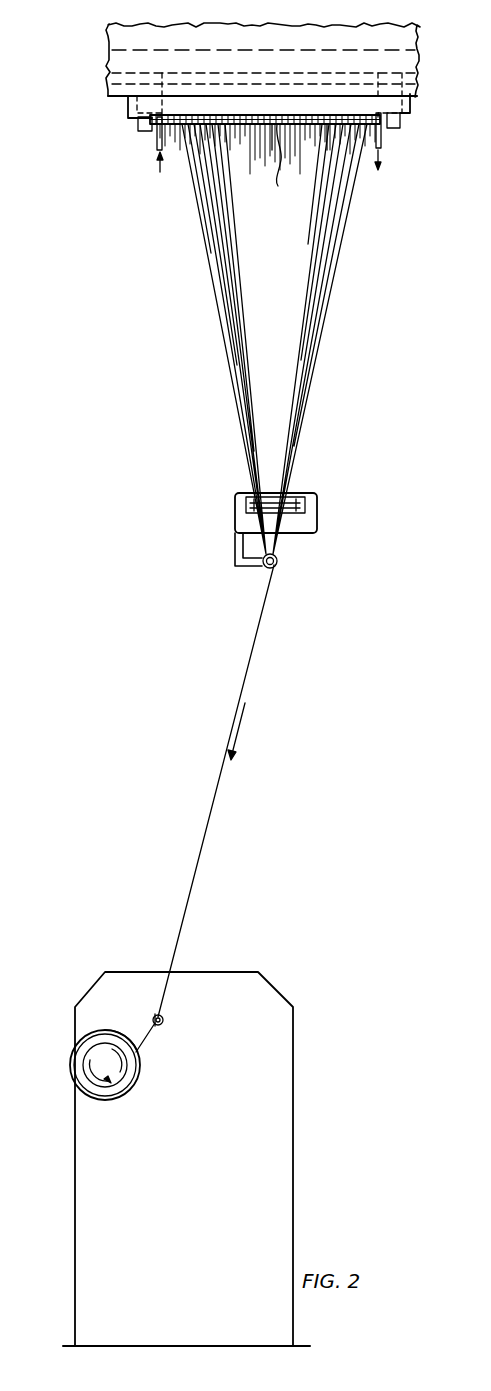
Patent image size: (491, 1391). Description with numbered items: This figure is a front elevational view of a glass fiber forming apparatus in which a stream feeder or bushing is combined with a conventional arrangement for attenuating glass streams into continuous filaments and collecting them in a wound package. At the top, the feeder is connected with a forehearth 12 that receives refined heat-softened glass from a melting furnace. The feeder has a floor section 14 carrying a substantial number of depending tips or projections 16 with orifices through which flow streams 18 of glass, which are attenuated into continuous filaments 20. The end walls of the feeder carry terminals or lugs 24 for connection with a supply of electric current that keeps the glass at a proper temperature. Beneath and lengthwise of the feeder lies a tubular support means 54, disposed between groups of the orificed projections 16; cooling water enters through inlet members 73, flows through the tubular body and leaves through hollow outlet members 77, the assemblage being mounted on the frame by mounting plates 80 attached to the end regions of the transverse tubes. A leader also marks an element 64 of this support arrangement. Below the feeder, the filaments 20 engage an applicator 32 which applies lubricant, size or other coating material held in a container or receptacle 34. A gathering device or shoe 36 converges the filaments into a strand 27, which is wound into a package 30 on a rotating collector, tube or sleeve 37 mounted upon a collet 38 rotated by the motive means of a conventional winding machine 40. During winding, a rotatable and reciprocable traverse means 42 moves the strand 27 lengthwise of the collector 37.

The forehearth 12 is at (106, 30).
The feeder floor section 14 is at (271, 126).
The tips or projections 16 is at (327, 118).
The streams 18 is at (232, 128).
The filaments 20 is at (226, 190).
The terminals or lugs 24 is at (138, 121).
The strand 27 is at (265, 627).
The package 30 is at (72, 1052).
The applicator 32 is at (293, 505).
The container or receptacle 34 is at (318, 515).
The gathering device or shoe 36 is at (265, 568).
The collector, tube or sleeve 37 is at (128, 1032).
The collet 38 is at (82, 1072).
The winding machine 40 is at (210, 966).
The traverse means 42 is at (163, 1020).
The tubular support means 54 is at (280, 165).
The needle plate 64 is at (272, 118).
The inlets 73 is at (160, 150).
The outlet members 77 is at (383, 138).
The mounting plates 80 is at (157, 133).